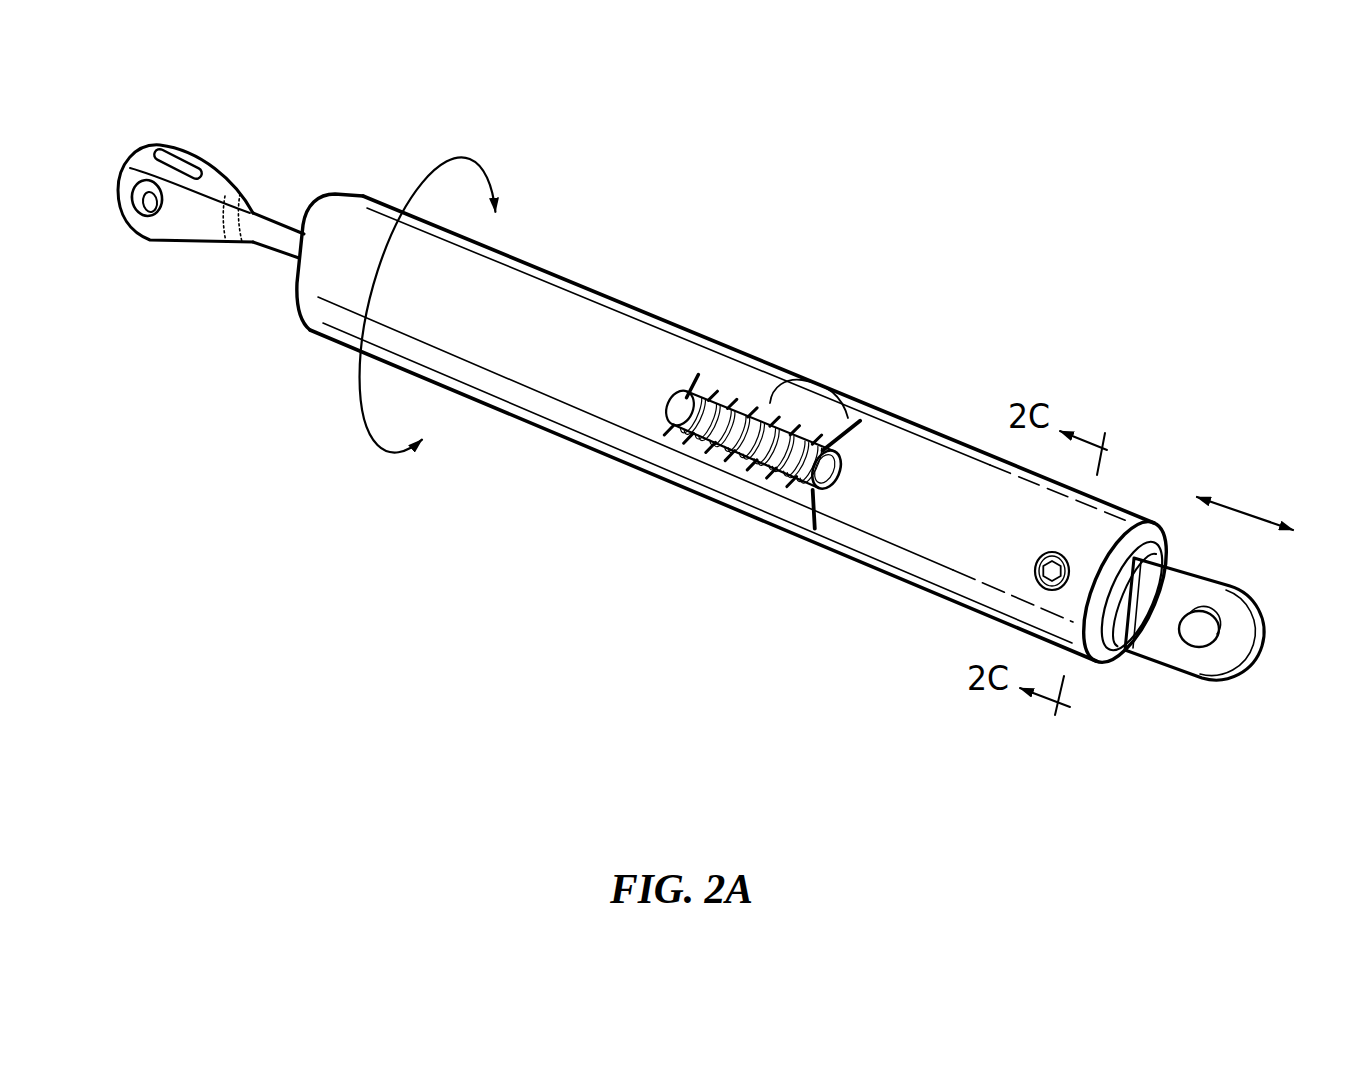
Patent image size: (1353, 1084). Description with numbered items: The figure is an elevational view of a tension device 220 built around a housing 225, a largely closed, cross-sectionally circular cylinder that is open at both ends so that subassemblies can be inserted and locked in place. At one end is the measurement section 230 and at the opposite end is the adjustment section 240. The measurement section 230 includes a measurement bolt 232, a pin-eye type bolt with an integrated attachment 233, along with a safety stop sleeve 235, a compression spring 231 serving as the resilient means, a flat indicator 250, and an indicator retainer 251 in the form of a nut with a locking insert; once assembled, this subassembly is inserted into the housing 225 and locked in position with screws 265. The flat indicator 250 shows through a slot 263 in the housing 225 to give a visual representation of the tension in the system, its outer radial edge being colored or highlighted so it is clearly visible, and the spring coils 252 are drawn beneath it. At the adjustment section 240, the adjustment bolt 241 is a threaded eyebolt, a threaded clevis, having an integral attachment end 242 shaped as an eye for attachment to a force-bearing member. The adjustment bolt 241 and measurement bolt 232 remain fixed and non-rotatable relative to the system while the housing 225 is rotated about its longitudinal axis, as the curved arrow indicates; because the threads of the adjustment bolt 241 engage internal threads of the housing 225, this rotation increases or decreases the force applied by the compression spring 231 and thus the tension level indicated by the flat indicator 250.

The device 220 is at (513, 622).
The housing 225 is at (562, 415).
The measurement section 230 is at (1112, 362).
The compression spring 231 is at (775, 403).
The measurement bolt 232 is at (1120, 658).
The integrated attachment 233 is at (1203, 658).
The safety stop sleeve 235 is at (847, 397).
The adjustment section 240 is at (603, 197).
The adjustment bolt 241 is at (263, 250).
The attachment end 242 is at (146, 240).
The flat indicator 250 is at (700, 376).
The indicator retainer 251 is at (686, 390).
The spring coils 252 is at (712, 455).
The slot 263 is at (668, 415).
The screws 265 is at (1035, 583).